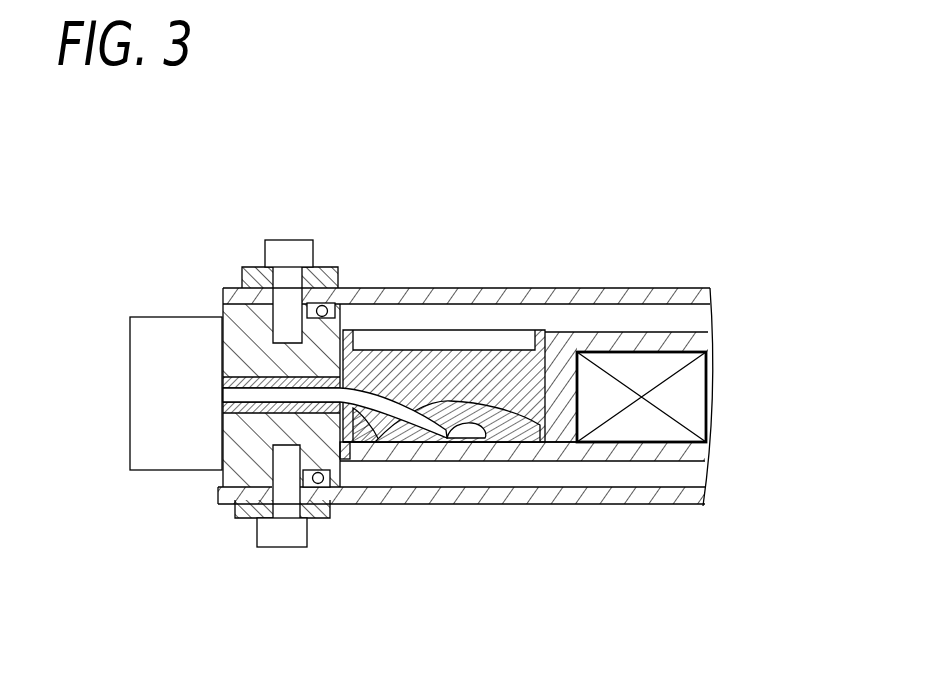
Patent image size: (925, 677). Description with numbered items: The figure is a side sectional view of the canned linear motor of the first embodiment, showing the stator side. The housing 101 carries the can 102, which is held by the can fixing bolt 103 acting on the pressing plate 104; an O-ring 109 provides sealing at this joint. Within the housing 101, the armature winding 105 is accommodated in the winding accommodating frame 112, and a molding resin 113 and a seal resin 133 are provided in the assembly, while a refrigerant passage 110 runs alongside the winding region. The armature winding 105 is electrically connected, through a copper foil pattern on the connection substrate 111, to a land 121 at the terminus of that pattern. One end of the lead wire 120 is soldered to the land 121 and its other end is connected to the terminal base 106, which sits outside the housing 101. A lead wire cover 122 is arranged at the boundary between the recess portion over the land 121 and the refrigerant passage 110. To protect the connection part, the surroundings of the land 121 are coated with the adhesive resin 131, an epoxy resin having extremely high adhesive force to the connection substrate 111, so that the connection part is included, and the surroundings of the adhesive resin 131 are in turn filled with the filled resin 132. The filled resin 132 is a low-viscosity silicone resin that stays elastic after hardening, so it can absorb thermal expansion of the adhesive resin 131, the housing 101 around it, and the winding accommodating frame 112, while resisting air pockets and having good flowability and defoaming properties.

The housing 101 is at (232, 476).
The can 102 is at (222, 290).
The can fixing bolt 103 is at (262, 545).
The pressing plate 104 is at (238, 513).
The armature winding 105 is at (680, 392).
The terminal base 106 is at (156, 362).
The O-ring 109 is at (332, 495).
The refrigerant passage 110 is at (516, 318).
The connection substrate 111 is at (690, 453).
The winding accommodating frame 112 is at (700, 344).
The molding resin 113 is at (640, 447).
The lead wire 120 is at (225, 388).
The land 121 is at (482, 442).
The lead wire cover 122 is at (420, 340).
The adhesive resin 131 is at (528, 442).
The filled resin 132 is at (470, 372).
The seal resin 133 is at (352, 458).